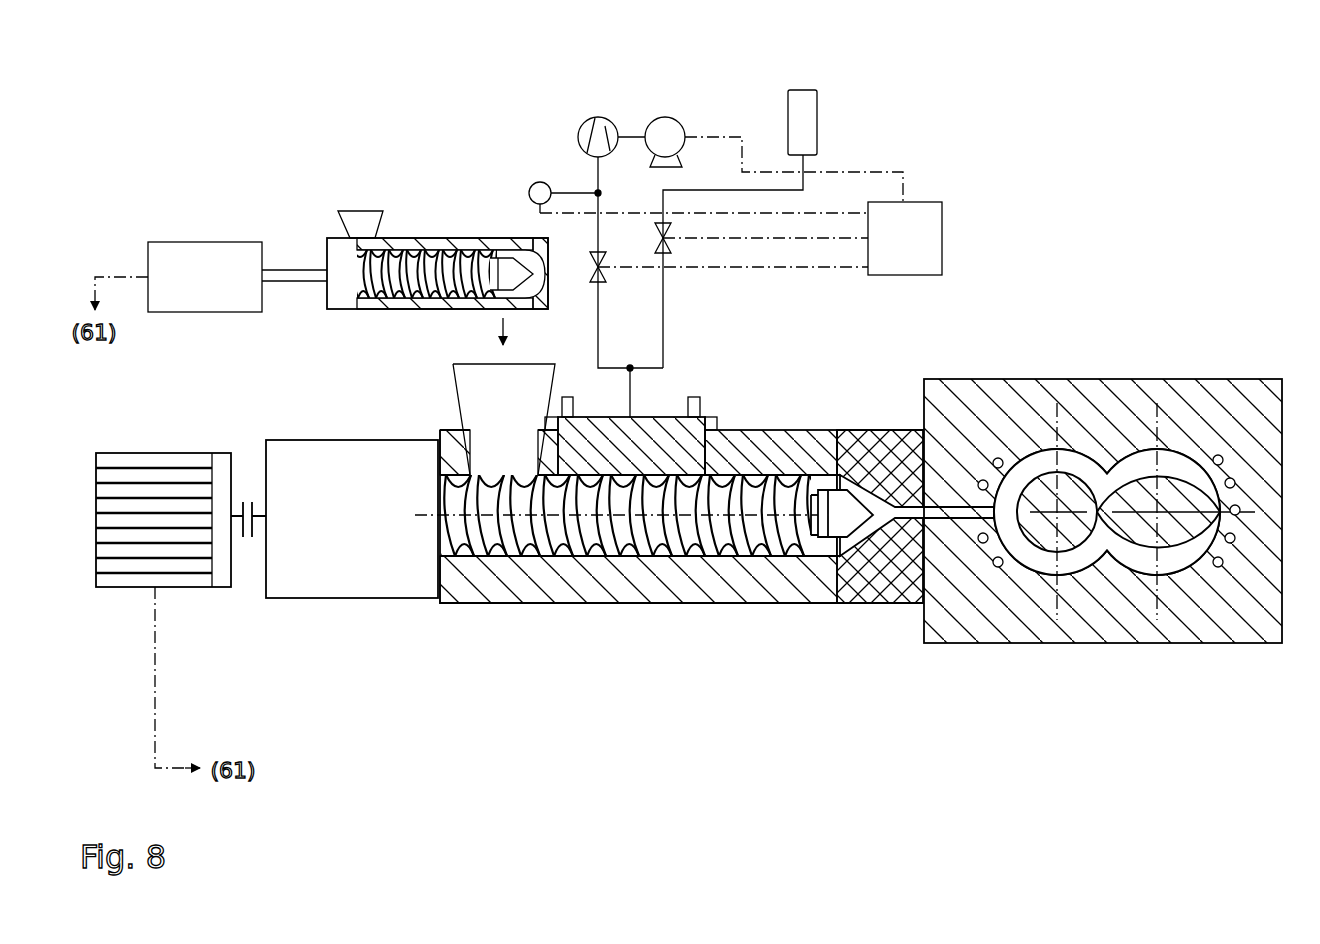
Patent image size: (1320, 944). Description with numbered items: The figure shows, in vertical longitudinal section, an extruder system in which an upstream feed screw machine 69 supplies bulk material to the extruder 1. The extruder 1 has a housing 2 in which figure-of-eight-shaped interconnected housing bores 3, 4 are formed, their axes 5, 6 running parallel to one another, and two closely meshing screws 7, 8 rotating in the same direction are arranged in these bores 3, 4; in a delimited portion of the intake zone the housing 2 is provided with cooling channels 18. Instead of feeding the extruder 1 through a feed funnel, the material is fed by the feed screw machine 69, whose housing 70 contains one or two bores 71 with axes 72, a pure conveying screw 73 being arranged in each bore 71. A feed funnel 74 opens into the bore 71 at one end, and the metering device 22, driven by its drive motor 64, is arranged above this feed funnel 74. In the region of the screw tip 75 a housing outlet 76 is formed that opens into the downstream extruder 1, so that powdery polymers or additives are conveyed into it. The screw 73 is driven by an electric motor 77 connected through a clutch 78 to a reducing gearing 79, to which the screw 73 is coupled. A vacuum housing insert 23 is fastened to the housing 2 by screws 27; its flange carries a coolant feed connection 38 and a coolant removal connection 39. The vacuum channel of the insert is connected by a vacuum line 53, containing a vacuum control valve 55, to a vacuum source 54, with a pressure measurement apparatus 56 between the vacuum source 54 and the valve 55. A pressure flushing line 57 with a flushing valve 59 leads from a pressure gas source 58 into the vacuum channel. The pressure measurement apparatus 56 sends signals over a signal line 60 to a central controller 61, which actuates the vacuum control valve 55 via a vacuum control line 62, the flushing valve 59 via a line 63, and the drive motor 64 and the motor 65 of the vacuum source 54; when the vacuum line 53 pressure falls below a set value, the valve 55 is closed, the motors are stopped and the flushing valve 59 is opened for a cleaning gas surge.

The extruder 1 is at (1078, 334).
The housing 2 is at (1050, 381).
The housing bore 3 is at (1153, 565).
The housing bore 4 is at (1027, 557).
The axis 5 is at (1127, 492).
The axis 6 is at (1083, 560).
The screw 7 is at (1160, 489).
The screw 8 is at (1043, 459).
The cooling channels 18 is at (981, 480).
The metering device 22 is at (413, 237).
The vacuum housing insert 23 is at (599, 403).
The screws 27 is at (545, 437).
The coolant feed connection 38 is at (567, 395).
The coolant removal connection 39 is at (692, 395).
The vacuum line 53 is at (597, 330).
The vacuum source 54 is at (598, 125).
The vacuum control valve 55 is at (593, 252).
The pressure measurement apparatus 56 is at (540, 182).
The pressure flushing line 57 is at (667, 302).
The pressure gas source 58 is at (800, 95).
The flushing valve 59 is at (670, 247).
The signal line 60 is at (578, 212).
The central controller 61 is at (928, 205).
The vacuum control line 62 is at (782, 266).
The line 63 is at (727, 237).
The drive motor 64 is at (195, 250).
The motor 65 is at (665, 122).
The feed screw machine 69 is at (771, 418).
The housing 70 is at (823, 433).
The bore 71 is at (740, 550).
The axis 72 is at (842, 518).
The screw 73 is at (775, 540).
The feed funnel 74 is at (487, 397).
The screw tip 75 is at (858, 500).
The housing outlet 76 is at (918, 518).
The electric motor 77 is at (128, 582).
The clutch 78 is at (260, 527).
The reducing gearing 79 is at (350, 590).